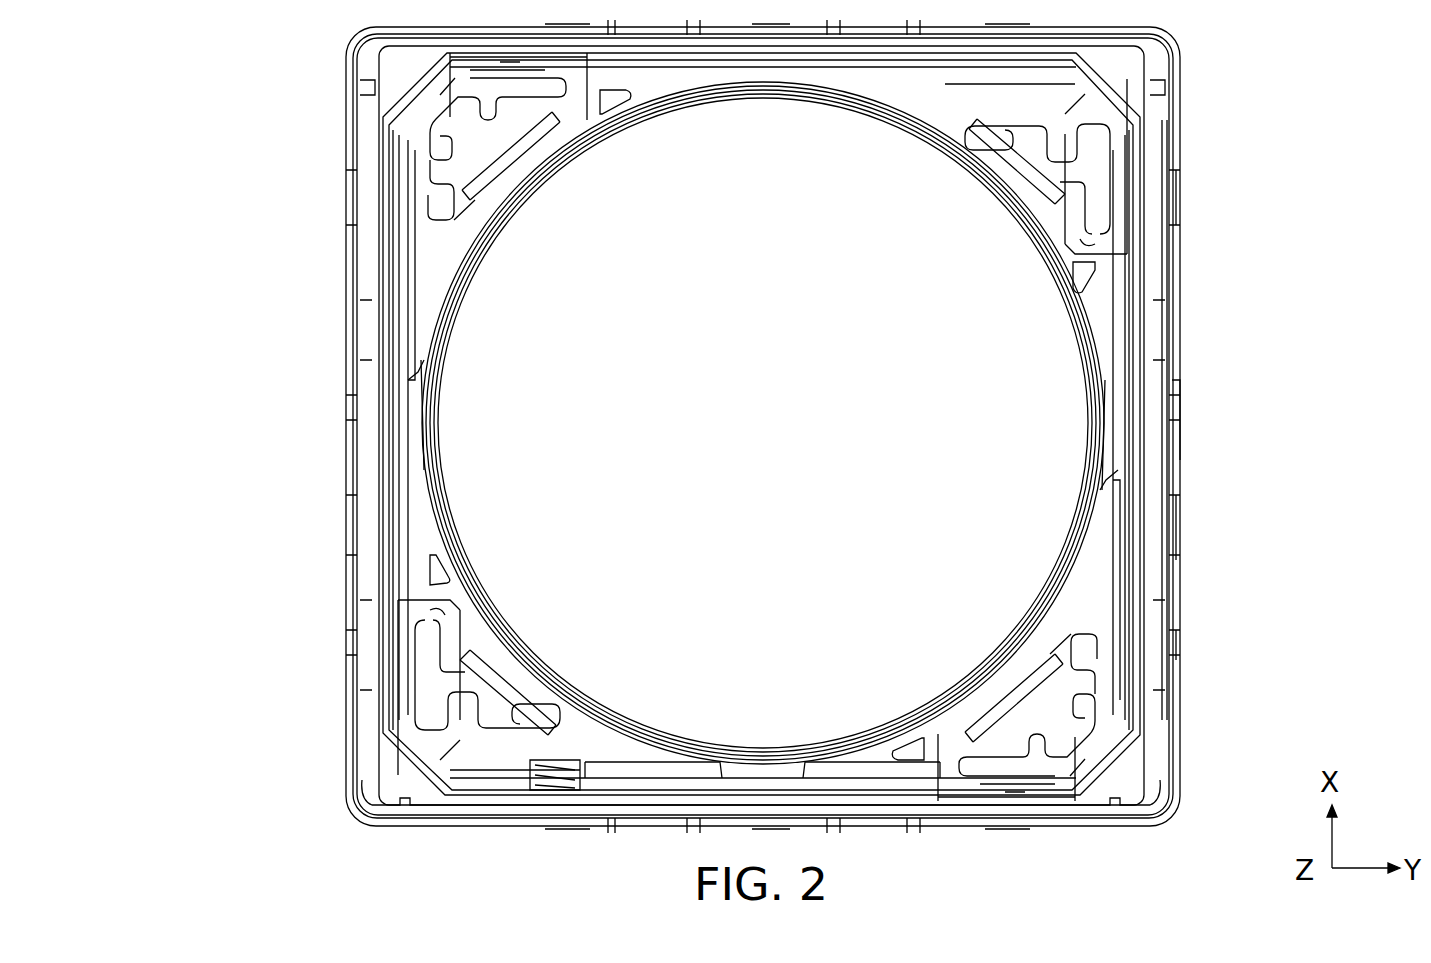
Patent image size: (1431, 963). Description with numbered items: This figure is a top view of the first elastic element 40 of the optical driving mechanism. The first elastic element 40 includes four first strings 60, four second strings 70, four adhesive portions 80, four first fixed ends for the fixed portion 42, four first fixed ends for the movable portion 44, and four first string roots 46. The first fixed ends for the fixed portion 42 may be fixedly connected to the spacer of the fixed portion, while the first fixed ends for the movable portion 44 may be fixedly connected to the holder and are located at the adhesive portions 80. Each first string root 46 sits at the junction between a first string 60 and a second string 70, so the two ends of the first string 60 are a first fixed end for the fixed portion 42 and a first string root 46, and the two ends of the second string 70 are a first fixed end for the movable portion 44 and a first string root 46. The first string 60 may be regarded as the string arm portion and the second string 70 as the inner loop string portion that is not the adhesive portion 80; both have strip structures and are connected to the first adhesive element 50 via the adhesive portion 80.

The first elastic element 40 is at (125, 72).
The first fixed ends for the fixed portion 42 is at (388, 778).
The first fixed ends for the movable portion 44 is at (447, 508).
The first string root 46 is at (570, 715).
The first adhesive element 50 is at (608, 100).
The first string 60 is at (430, 670).
The second string 70 is at (503, 660).
The adhesive portion 80 is at (418, 527).